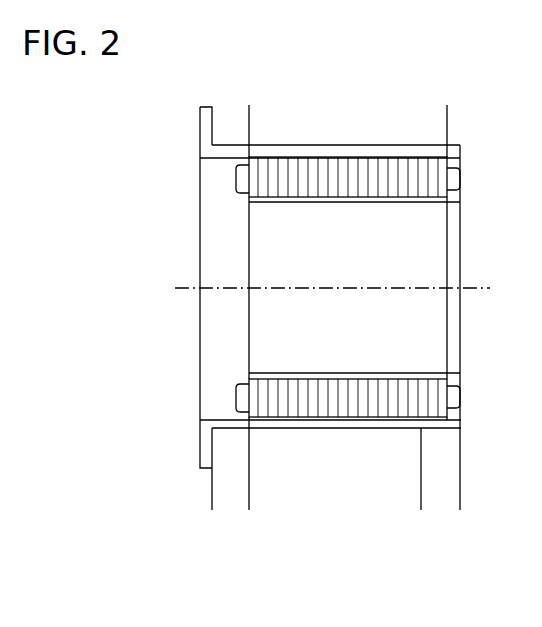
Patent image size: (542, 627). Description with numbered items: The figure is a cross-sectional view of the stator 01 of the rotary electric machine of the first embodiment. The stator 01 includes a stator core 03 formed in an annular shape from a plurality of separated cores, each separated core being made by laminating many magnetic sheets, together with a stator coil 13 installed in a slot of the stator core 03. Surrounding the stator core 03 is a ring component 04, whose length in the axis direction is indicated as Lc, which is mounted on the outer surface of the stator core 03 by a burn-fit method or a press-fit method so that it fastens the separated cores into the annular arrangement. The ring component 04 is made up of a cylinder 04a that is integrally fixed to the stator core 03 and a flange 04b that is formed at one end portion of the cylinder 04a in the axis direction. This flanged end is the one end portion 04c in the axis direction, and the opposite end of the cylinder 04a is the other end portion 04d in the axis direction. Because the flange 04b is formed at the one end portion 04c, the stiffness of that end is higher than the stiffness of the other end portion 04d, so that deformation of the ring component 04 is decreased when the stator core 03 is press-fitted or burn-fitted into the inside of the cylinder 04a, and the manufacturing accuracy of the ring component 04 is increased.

The stator 01 is at (100, 147).
The stator core 03 is at (362, 183).
The ring component 04 is at (315, 150).
The cylinder 04a is at (470, 556).
The flange 04b is at (206, 142).
The one end portion in the axis direction 04c is at (249, 510).
The other end portion in the axis direction 04d is at (461, 510).
The stator coil 13 is at (236, 168).
The length in the axis direction of the ring component Lc is at (447, 123).